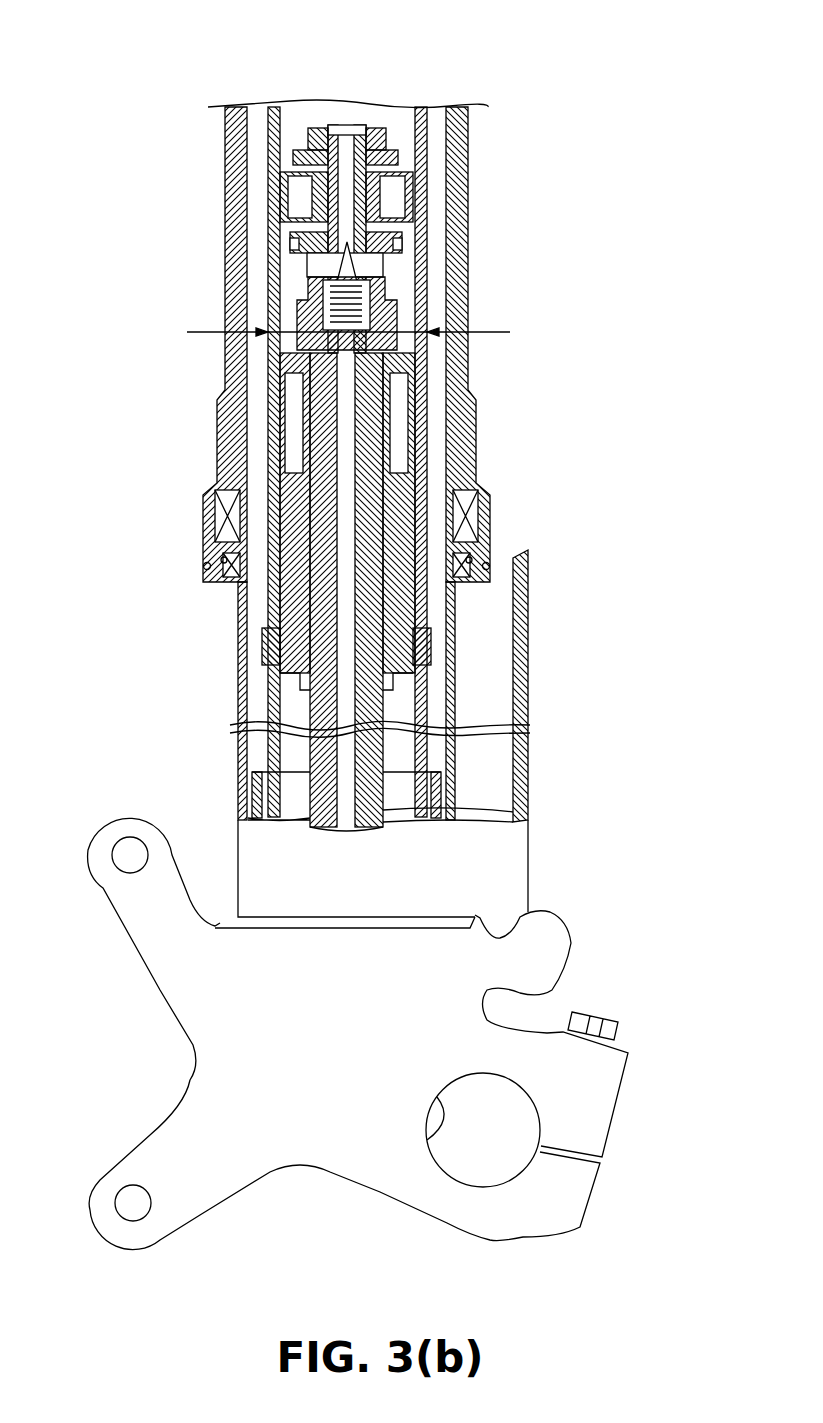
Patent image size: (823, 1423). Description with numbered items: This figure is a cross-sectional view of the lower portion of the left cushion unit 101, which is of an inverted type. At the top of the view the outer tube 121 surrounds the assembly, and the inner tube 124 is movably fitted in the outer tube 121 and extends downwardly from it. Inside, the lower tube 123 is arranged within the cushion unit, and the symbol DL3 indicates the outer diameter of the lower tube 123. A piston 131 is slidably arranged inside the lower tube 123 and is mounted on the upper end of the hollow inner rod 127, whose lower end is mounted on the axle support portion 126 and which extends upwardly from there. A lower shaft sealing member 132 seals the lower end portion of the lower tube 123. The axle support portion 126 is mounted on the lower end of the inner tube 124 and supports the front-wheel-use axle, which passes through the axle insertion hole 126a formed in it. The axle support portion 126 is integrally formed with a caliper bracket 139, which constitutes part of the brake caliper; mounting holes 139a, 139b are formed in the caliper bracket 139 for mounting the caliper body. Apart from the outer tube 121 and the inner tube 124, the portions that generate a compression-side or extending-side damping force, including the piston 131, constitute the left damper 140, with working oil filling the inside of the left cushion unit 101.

The left cushion unit 101 is at (374, 476).
The left damper 140 is at (388, 130).
The lower tube 123 is at (430, 136).
The piston 131 is at (408, 162).
The outer tube 121 is at (225, 292).
The outer diameter of the lower tube DL3 is at (374, 332).
The inner tube 124 is at (238, 662).
The lower shaft sealing member 132 is at (437, 686).
The caliper bracket 139 is at (350, 1018).
The mounting hole 139a is at (130, 838).
The hollow inner rod 127 is at (447, 798).
The axle support portion 126 is at (474, 1034).
The axle insertion hole 126a is at (427, 1140).
The mounting hole 139b is at (130, 1222).